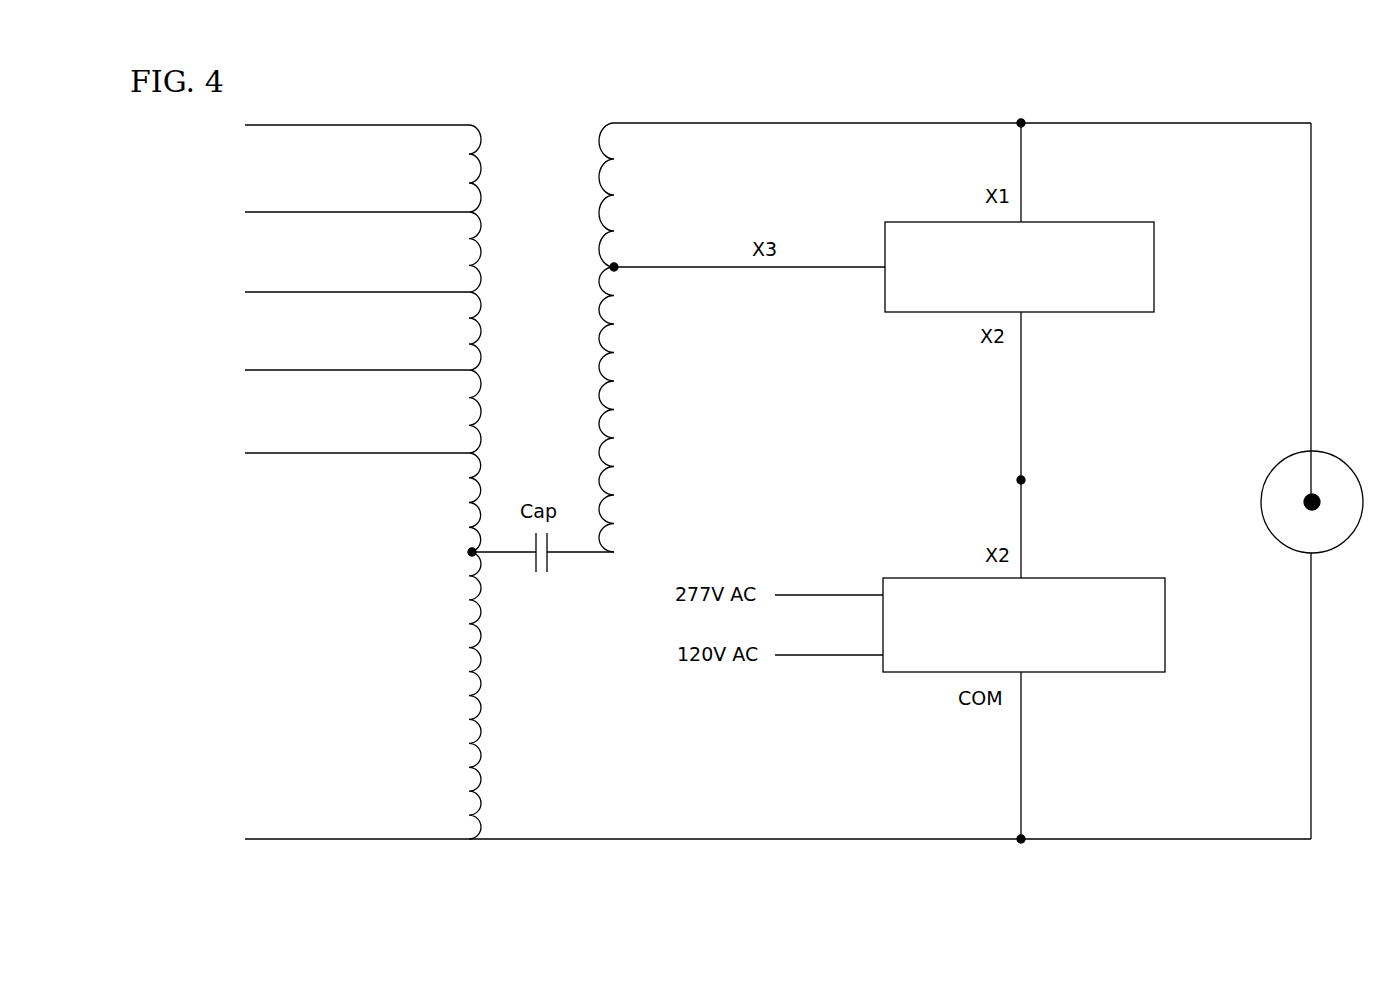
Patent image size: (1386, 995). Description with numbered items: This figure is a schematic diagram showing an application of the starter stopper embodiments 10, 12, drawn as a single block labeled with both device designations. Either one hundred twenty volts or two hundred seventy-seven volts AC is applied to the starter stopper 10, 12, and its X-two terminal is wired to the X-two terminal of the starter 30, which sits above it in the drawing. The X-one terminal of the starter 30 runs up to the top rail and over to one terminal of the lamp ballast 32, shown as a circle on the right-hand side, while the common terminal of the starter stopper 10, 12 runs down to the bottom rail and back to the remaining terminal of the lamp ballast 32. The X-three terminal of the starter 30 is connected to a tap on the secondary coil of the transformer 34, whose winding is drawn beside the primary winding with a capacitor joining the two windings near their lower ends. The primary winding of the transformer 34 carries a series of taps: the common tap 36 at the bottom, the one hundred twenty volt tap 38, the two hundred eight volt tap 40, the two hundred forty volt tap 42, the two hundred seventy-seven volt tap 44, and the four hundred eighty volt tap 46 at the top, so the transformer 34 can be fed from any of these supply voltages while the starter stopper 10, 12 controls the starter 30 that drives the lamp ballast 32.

The starter stopper 10 is at (1012, 571).
The starter stopper 12 is at (941, 577).
The starter 30 is at (1154, 272).
The lamp ballast 32 is at (1285, 548).
The transformer 34 is at (598, 171).
The common primary tap 36 is at (374, 838).
The 120V primary tap 38 is at (370, 455).
The 208V primary tap 40 is at (378, 370).
The 240V primary tap 42 is at (382, 292).
The 277V primary tap 44 is at (362, 212).
The 480V primary tap 46 is at (373, 125).